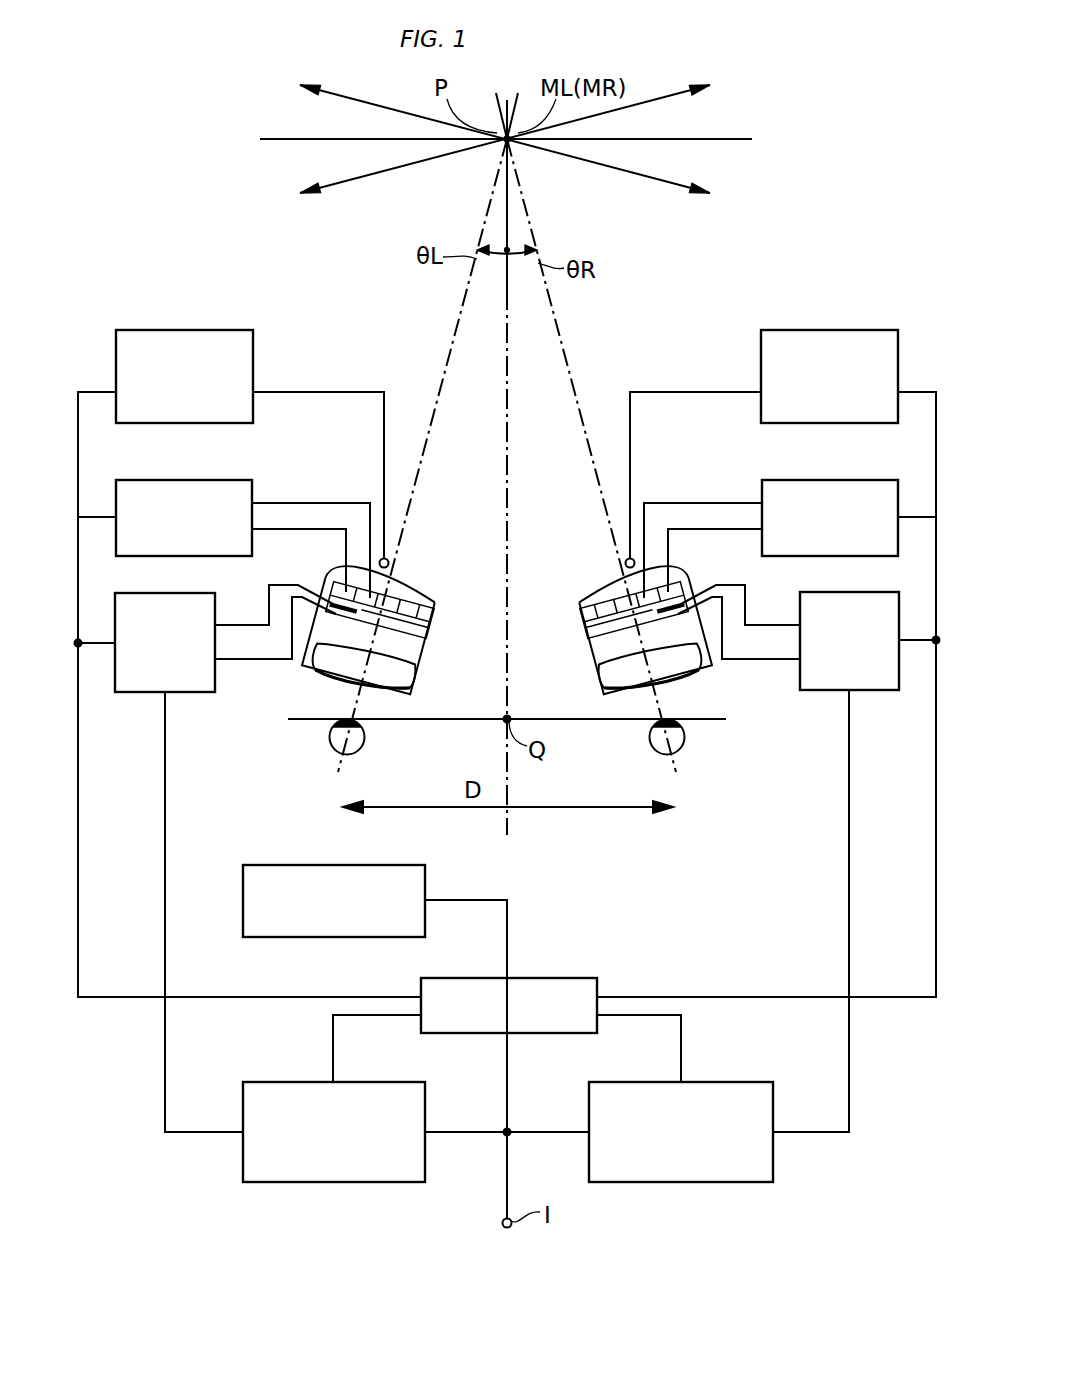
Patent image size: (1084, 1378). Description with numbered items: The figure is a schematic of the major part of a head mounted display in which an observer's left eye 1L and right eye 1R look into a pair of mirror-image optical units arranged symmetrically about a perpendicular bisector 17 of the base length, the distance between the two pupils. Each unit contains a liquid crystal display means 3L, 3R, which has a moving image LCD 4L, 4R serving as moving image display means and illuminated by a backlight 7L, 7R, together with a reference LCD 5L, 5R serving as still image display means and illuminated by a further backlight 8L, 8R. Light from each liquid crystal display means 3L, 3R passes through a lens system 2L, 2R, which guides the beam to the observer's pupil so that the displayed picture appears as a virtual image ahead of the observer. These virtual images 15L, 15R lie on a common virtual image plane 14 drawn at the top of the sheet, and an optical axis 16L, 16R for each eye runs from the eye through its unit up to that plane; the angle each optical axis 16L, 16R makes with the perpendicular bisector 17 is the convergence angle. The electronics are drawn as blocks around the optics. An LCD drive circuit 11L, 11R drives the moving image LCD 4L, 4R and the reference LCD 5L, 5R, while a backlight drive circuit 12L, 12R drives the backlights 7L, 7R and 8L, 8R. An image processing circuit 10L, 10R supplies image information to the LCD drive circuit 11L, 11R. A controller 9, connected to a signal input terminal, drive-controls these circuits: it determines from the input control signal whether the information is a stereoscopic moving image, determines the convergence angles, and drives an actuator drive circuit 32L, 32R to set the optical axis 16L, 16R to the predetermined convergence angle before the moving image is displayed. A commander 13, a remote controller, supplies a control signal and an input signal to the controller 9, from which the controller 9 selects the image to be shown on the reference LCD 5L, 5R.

The left eye 1L is at (330, 741).
The right eye 1R is at (684, 741).
The lens system 2L is at (304, 670).
The lens system 2R is at (710, 670).
The liquid crystal display means 3L is at (441, 606).
The liquid crystal display means 3R is at (573, 606).
The moving image LCD 4L is at (416, 673).
The moving image LCD 4R is at (598, 673).
The reference LCD 5L is at (342, 612).
The reference LCD 5R is at (672, 612).
The backlight 7L is at (389, 562).
The backlight 7R is at (625, 562).
The backlight 8L is at (325, 580).
The backlight 8R is at (585, 601).
The controller 9 is at (557, 978).
The image processing circuit 10L is at (378, 1082).
The image processing circuit 10R is at (727, 1082).
The LCD drive circuit 11L is at (188, 693).
The LCD drive circuit 11R is at (826, 691).
The backlight drive circuit 12L is at (204, 466).
The backlight drive circuit 12R is at (810, 466).
The commander 13 is at (243, 896).
The virtual image plane 14 is at (735, 133).
The virtual image 15L is at (685, 177).
The virtual image 15R is at (683, 104).
The optical axis 16L is at (452, 333).
The optical axis 16R is at (562, 336).
The perpendicular bisector 17 is at (509, 445).
The actuator drive circuit 32L is at (196, 316).
The actuator drive circuit 32R is at (836, 329).